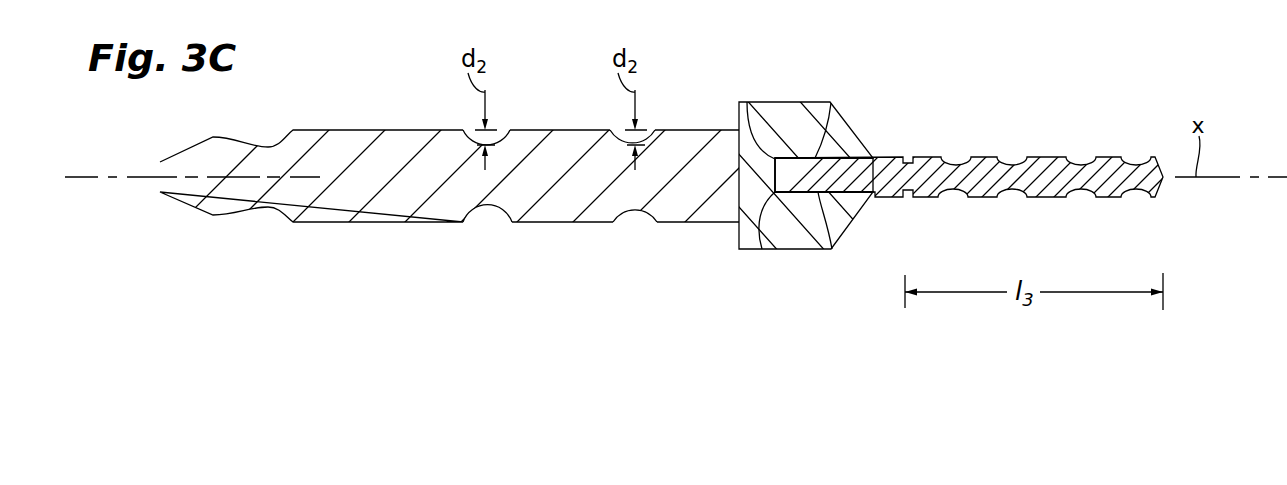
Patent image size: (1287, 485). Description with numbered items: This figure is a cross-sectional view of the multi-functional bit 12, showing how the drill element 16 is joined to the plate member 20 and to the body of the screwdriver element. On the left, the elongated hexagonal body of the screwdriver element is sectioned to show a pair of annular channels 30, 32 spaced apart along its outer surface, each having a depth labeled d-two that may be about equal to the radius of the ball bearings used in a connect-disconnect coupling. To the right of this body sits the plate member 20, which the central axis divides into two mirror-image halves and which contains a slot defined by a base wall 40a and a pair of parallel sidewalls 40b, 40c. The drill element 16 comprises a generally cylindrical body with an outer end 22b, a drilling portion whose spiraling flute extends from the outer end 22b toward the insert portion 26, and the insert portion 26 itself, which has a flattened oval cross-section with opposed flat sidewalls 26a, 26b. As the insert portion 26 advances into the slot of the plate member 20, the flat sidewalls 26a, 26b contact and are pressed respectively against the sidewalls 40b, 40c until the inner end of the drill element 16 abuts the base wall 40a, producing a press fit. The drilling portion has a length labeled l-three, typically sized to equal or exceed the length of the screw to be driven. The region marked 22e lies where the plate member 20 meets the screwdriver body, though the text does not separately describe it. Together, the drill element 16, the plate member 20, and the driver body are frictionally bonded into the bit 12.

The multi-functional bit 12 is at (976, 49).
The drill element 16 is at (1047, 157).
The plate member 20 is at (781, 112).
The outer end 22b is at (747, 102).
The drill bit shoulder 22e is at (738, 118).
The insert portion 26 is at (852, 150).
The flat sidewall 26a is at (874, 156).
The flat sidewall 26b is at (868, 200).
The annular channel 30 is at (489, 207).
The annular channel 32 is at (636, 207).
The base wall 40a is at (760, 249).
The sidewall 40b is at (829, 102).
The sidewall 40c is at (832, 249).